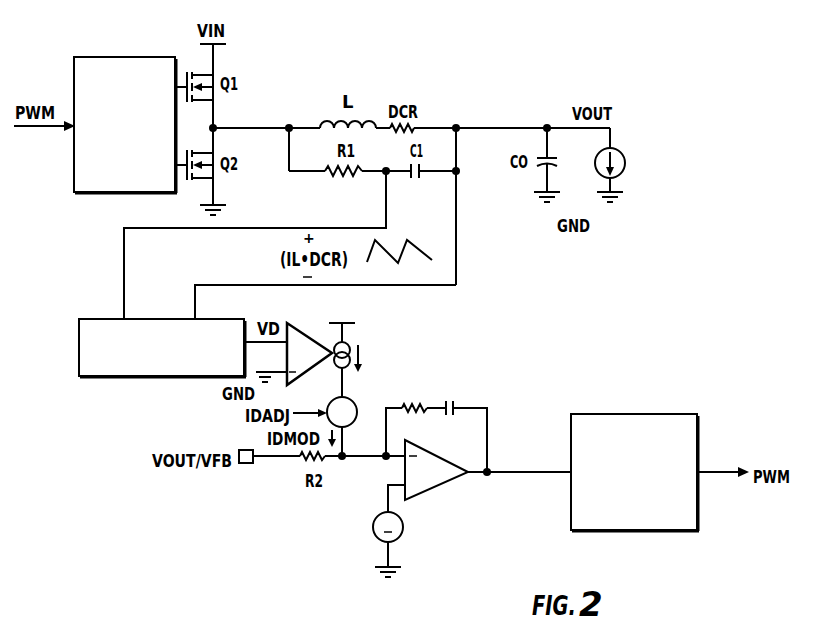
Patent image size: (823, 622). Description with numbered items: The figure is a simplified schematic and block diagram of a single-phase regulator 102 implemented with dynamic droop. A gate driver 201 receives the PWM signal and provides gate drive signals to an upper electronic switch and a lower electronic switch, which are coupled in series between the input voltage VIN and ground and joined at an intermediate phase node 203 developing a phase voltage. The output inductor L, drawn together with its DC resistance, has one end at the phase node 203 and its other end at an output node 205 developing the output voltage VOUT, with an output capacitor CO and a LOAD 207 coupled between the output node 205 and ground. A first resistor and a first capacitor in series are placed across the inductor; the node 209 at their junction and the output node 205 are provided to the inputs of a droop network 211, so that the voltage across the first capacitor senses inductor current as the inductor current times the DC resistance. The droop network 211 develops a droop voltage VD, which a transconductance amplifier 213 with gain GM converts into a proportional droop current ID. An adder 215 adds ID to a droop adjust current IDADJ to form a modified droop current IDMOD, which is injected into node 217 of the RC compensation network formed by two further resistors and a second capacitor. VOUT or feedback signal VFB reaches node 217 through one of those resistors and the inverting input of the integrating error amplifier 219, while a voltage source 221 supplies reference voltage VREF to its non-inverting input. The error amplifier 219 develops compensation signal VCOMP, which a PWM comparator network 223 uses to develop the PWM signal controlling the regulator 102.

The regulator 102 is at (136, 556).
The gate driver 201 is at (139, 152).
The phase node 203 is at (289, 118).
The output node 205 is at (503, 127).
The LOAD 207 is at (623, 152).
The node 209 is at (290, 228).
The droop network 211 is at (102, 318).
The transconductance amplifier 213 is at (302, 323).
The adder 215 is at (357, 405).
The node 217 is at (340, 462).
The integrating error amplifier 219 is at (433, 492).
The voltage source 221 is at (405, 530).
The PWM comparator network 223 is at (617, 506).